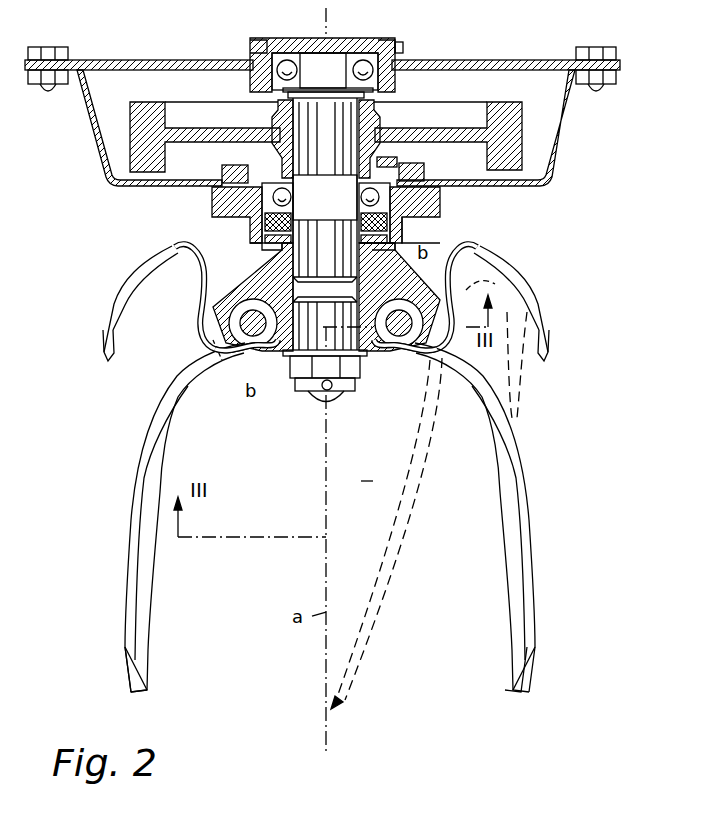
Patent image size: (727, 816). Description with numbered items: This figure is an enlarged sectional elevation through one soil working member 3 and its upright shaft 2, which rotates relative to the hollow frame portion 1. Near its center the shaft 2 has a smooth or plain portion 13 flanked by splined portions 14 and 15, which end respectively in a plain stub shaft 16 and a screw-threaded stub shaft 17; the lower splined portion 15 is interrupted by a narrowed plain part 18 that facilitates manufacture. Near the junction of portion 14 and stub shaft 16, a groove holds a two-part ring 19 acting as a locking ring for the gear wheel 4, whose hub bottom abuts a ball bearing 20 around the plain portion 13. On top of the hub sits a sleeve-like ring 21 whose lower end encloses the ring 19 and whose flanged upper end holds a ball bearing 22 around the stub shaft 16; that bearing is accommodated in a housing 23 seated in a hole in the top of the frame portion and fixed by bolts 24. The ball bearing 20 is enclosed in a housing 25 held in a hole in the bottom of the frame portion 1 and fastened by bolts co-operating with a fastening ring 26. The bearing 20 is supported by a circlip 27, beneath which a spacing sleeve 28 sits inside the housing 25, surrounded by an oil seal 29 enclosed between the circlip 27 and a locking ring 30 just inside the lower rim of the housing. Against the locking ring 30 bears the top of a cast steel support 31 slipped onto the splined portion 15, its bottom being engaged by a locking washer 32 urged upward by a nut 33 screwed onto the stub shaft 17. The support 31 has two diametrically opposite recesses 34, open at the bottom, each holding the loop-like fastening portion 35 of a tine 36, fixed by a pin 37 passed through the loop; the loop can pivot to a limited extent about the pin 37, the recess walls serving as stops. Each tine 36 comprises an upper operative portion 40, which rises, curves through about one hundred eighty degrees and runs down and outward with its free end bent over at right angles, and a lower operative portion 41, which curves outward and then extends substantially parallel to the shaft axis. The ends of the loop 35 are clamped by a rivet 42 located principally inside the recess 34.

The hollow frame portion 1 is at (90, 129).
The upright shaft 2 is at (300, 47).
The soil working member 3 is at (366, 470).
The gear wheel 4 is at (135, 100).
The smooth or plain portion 13 is at (325, 197).
The splined portion 14 is at (325, 224).
The splined portion 15 is at (326, 213).
The plain stub shaft 16 is at (325, 71).
The screw-threaded stub shaft 17 is at (322, 408).
The narrowed plain part 18 is at (325, 289).
The ring 19 is at (378, 100).
The ball bearing 20 is at (397, 158).
The sleeve-like ring 21 is at (282, 90).
The ball bearing 22 is at (276, 42).
The housing 23 is at (364, 42).
The bolts 24 is at (403, 44).
The housing 25 is at (441, 200).
The fastening ring 26 is at (426, 174).
The circlip 27 is at (410, 214).
The spacing sleeve 28 is at (267, 242).
The oil seal 29 is at (244, 222).
The locking ring 30 is at (376, 246).
The support 31 is at (247, 286).
The locking washer 32 is at (360, 378).
The nut 33 is at (340, 396).
The recesses 34 is at (248, 352).
The loop-like fastening portion 35 is at (252, 378).
The tine 36 is at (172, 451).
The pin 37 is at (229, 309).
The upper operative portion 40 is at (123, 302).
The lower operative portion 41 is at (146, 572).
The rivet 42 is at (221, 356).